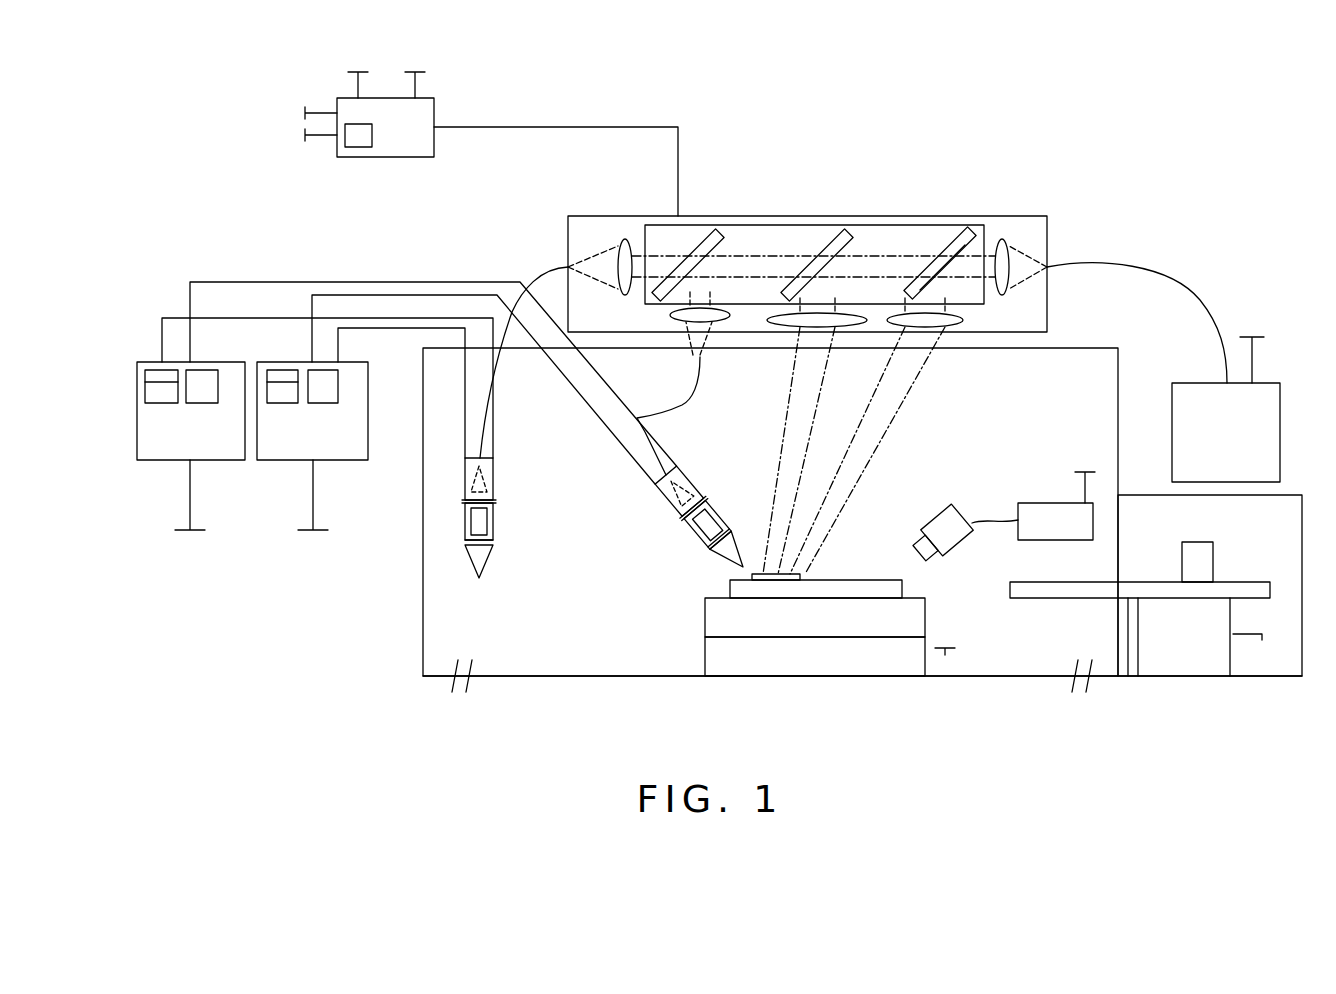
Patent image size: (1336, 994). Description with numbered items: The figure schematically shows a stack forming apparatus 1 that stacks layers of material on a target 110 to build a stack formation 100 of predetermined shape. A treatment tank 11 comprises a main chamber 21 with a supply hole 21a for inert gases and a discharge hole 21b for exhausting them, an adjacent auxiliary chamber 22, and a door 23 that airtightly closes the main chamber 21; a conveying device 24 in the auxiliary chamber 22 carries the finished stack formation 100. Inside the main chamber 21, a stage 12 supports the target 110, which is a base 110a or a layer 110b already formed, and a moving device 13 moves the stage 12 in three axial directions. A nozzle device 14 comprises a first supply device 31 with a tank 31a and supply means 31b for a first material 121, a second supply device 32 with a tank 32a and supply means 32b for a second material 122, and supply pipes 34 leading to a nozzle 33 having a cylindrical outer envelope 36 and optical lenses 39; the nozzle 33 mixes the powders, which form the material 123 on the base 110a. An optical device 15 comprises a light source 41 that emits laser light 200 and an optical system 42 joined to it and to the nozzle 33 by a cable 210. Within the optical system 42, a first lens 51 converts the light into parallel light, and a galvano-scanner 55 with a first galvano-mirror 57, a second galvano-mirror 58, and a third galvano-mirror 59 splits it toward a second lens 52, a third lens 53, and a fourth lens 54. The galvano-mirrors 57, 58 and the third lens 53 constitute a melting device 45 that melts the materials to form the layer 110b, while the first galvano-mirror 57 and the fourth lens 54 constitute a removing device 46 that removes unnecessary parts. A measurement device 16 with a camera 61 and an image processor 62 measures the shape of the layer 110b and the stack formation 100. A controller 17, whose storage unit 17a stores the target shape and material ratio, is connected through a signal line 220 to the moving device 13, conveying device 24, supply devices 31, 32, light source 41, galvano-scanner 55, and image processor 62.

The stack forming apparatus 1 is at (960, 133).
The treatment tank 11 is at (420, 604).
The stage 12 is at (704, 614).
The moving device 13 is at (704, 650).
The nozzle device 14 is at (487, 264).
The optical device 15 is at (1081, 198).
The measurement device 16 is at (1027, 463).
The controller 17 is at (436, 106).
The storage unit 17a is at (360, 157).
The main chamber 21 is at (965, 677).
The supply hole 21a is at (472, 688).
The discharge hole 21b is at (1085, 688).
The auxiliary chamber 22 is at (1292, 677).
The door 23 is at (1120, 515).
The conveying device 24 is at (1232, 676).
The first supply device 31 is at (136, 426).
The tank 31a is at (158, 372).
The supply means 31b is at (203, 404).
The second supply device 32 is at (369, 412).
The tank 32a is at (283, 404).
The supply means 32b is at (324, 404).
The nozzle 33 is at (495, 480).
The supply pipes 34 is at (238, 282).
The outer envelope 36 is at (490, 560).
The optical lenses 39 is at (468, 540).
The light source 41 is at (1281, 432).
The optical system 42 is at (907, 224).
The melting device 45 is at (858, 352).
The removing device 46 is at (953, 352).
The first lens 51 is at (1003, 240).
The second lens 52 is at (630, 240).
The third lens 53 is at (822, 330).
The fourth lens 54 is at (922, 330).
The galvano-scanner 55 is at (868, 225).
The first galvano-mirror 57 is at (948, 242).
The second galvano-mirror 58 is at (824, 242).
The third galvano-mirror 59 is at (698, 240).
The camera 61 is at (948, 515).
The image processor 62 is at (1060, 541).
The stack formation 100 is at (1214, 560).
The target 110 is at (868, 560).
The base 110a is at (835, 578).
The layer 110b is at (783, 520).
The first material 121 is at (144, 392).
The second material 122 is at (285, 370).
The material 123 is at (740, 577).
The laser light 200 is at (600, 252).
The cable 210 is at (540, 283).
The signal line 220 is at (333, 112).